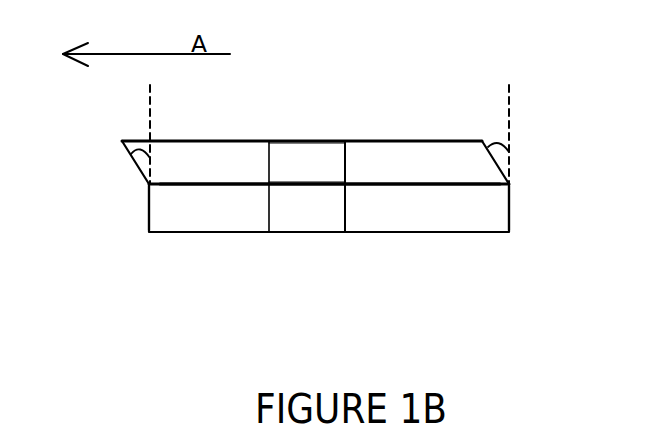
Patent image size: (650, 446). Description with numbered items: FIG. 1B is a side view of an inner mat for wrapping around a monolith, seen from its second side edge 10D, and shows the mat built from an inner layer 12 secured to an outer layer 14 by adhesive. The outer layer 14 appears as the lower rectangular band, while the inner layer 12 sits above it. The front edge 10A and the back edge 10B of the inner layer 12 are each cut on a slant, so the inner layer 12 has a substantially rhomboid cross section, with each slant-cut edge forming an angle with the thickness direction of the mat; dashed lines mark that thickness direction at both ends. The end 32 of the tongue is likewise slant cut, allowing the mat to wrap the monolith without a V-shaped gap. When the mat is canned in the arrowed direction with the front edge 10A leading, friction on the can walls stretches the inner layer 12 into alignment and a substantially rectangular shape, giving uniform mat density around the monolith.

The inner layer 12 is at (425, 142).
The outer layer 14 is at (370, 223).
The end of the tongue 32 is at (322, 160).
The front edge 10A is at (148, 192).
The back edge 10B is at (512, 213).
The second side edge 10D is at (480, 187).